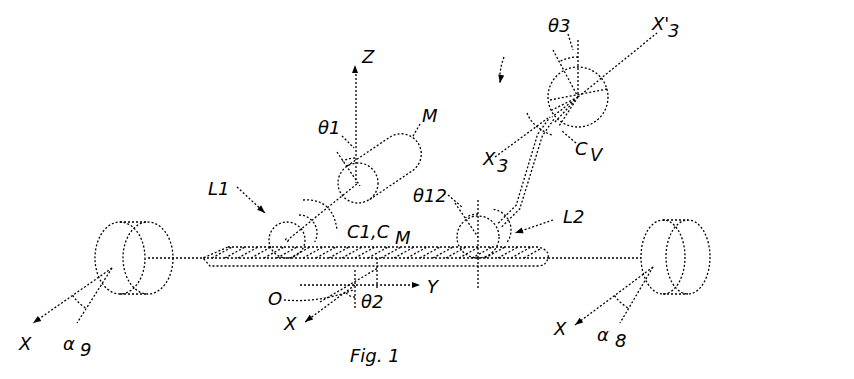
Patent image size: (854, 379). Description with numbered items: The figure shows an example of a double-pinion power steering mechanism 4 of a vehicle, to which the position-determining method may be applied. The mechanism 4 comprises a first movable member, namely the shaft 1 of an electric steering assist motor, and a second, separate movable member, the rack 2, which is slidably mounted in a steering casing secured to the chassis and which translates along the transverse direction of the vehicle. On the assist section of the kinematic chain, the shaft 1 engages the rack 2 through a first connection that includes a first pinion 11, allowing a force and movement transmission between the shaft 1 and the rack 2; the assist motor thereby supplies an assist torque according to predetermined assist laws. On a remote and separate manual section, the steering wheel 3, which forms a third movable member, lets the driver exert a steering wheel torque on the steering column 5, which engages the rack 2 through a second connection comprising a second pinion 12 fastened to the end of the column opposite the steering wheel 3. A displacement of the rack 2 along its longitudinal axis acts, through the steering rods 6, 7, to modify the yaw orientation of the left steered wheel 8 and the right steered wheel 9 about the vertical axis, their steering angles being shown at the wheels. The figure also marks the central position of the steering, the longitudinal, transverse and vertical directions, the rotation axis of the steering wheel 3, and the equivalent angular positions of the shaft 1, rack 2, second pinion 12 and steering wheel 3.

The shaft 1 is at (332, 193).
The rack 2 is at (426, 250).
The steering wheel 3 is at (612, 88).
The steering mechanism 4 is at (511, 62).
The steering column 5 is at (535, 178).
The steering rod 6 is at (602, 257).
The steering rod 7 is at (190, 255).
The left steered wheel 8 is at (700, 228).
The right steered wheel 9 is at (107, 231).
The first pinion 11 is at (256, 272).
The second pinion 12 is at (488, 278).